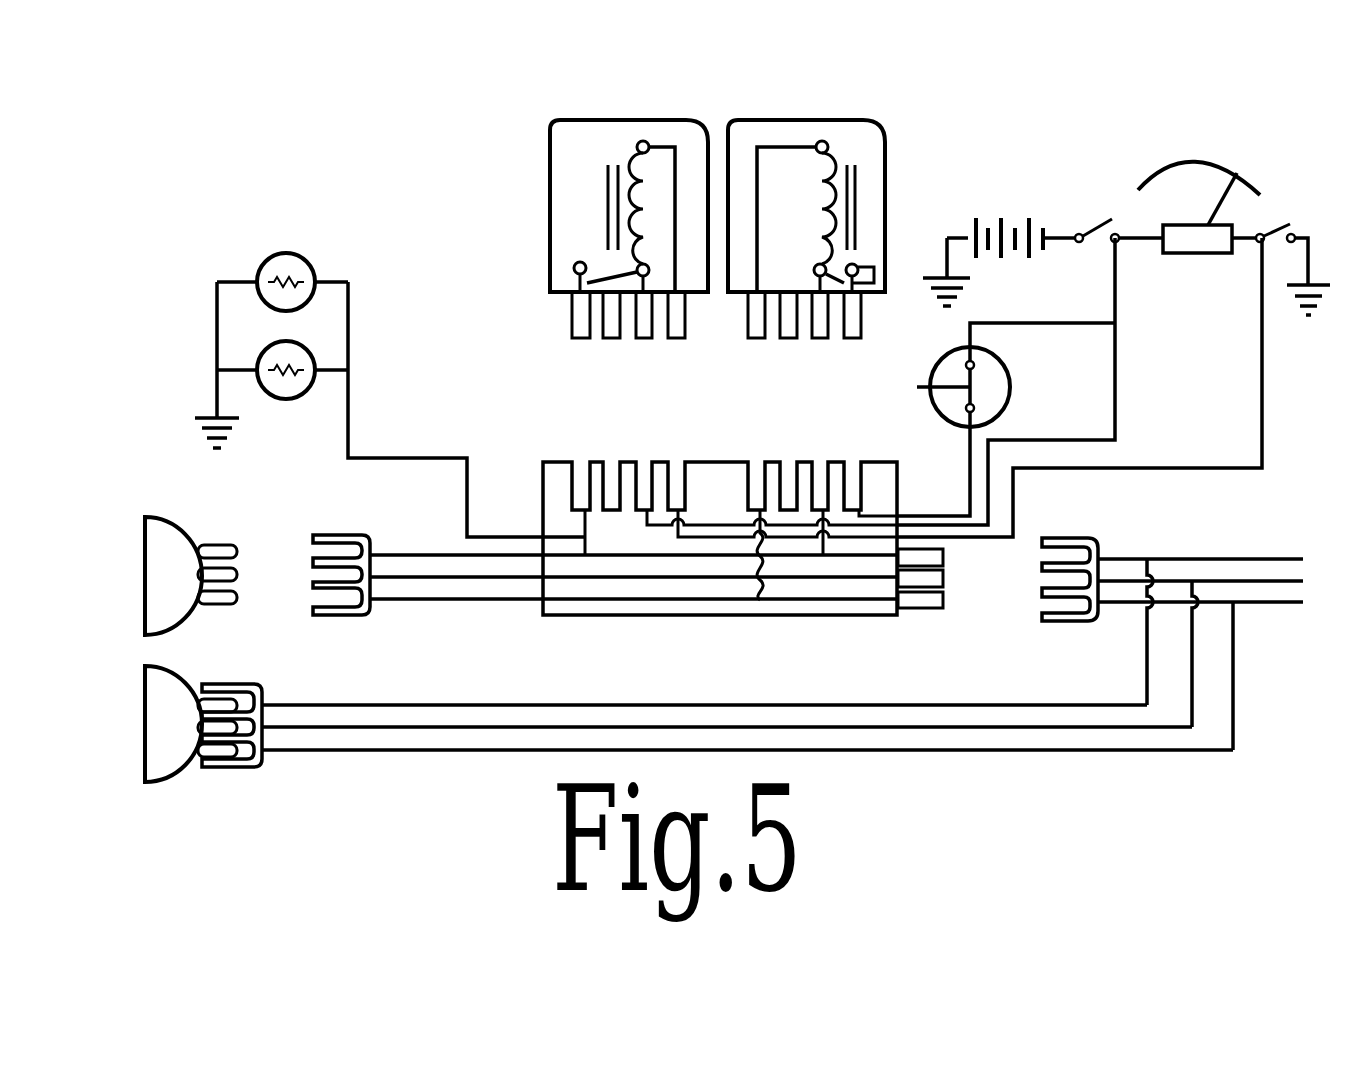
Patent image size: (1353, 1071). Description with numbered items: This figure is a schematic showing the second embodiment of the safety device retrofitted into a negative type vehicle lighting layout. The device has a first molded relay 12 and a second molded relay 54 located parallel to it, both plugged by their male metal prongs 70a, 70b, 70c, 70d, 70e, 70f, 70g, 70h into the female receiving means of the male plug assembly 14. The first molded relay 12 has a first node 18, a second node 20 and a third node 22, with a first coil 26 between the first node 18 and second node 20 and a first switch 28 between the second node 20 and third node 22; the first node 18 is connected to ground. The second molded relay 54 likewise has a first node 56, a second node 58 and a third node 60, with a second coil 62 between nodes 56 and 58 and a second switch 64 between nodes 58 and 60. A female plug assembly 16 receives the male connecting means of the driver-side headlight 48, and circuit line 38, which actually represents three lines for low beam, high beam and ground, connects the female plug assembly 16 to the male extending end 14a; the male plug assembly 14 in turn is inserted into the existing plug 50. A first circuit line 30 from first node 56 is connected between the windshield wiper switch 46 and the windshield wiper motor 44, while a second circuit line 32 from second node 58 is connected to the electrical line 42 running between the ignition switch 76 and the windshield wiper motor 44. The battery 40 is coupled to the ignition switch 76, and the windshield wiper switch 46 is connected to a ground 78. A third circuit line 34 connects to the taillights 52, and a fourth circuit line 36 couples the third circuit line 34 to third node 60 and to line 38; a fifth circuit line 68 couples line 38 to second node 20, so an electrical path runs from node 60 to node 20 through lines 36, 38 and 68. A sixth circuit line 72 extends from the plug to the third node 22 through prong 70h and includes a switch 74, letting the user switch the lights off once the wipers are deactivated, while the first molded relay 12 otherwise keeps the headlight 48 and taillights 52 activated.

The first molded relay 12 is at (783, 118).
The male plug assembly 14 is at (630, 617).
The male extending end 14a is at (943, 612).
The female plug assembly 16 is at (363, 617).
The first node 18 is at (828, 145).
The second node 20 is at (815, 267).
The third node 22 is at (853, 263).
The first coil 26 is at (837, 167).
The first switch 28 is at (833, 273).
The first circuit line 30 is at (1260, 317).
The second circuit line 32 is at (1117, 340).
The third circuit line 34 is at (423, 458).
The fourth circuit line 36 is at (587, 520).
The circuit line 38 is at (427, 550).
The battery 40 is at (1025, 218).
The electrical line 42 is at (1138, 237).
The windshield wiper motor 44 is at (1233, 228).
The windshield wiper switch 46 is at (1278, 232).
The headlight 48 is at (187, 617).
The existing plug 50 is at (1080, 622).
The taillights 52 is at (267, 353).
The second molded relay 54 is at (607, 118).
The first node 56 is at (650, 144).
The second node 58 is at (648, 265).
The third node 60 is at (572, 268).
The second coil 62 is at (633, 165).
The second switch 64 is at (618, 273).
The fifth circuit line 68 is at (825, 537).
The male metal prong 70a is at (582, 338).
The male metal prong 70b is at (612, 338).
The male metal prong 70c is at (644, 338).
The male metal prong 70d is at (677, 338).
The male metal prong 70e is at (757, 338).
The male metal prong 70f is at (792, 338).
The male metal prong 70g is at (820, 338).
The male metal prong 70h is at (852, 338).
The sixth circuit line 72 is at (1090, 322).
The switch 74 is at (1008, 370).
The ignition switch 76 is at (1102, 221).
The ground 78 is at (1330, 292).